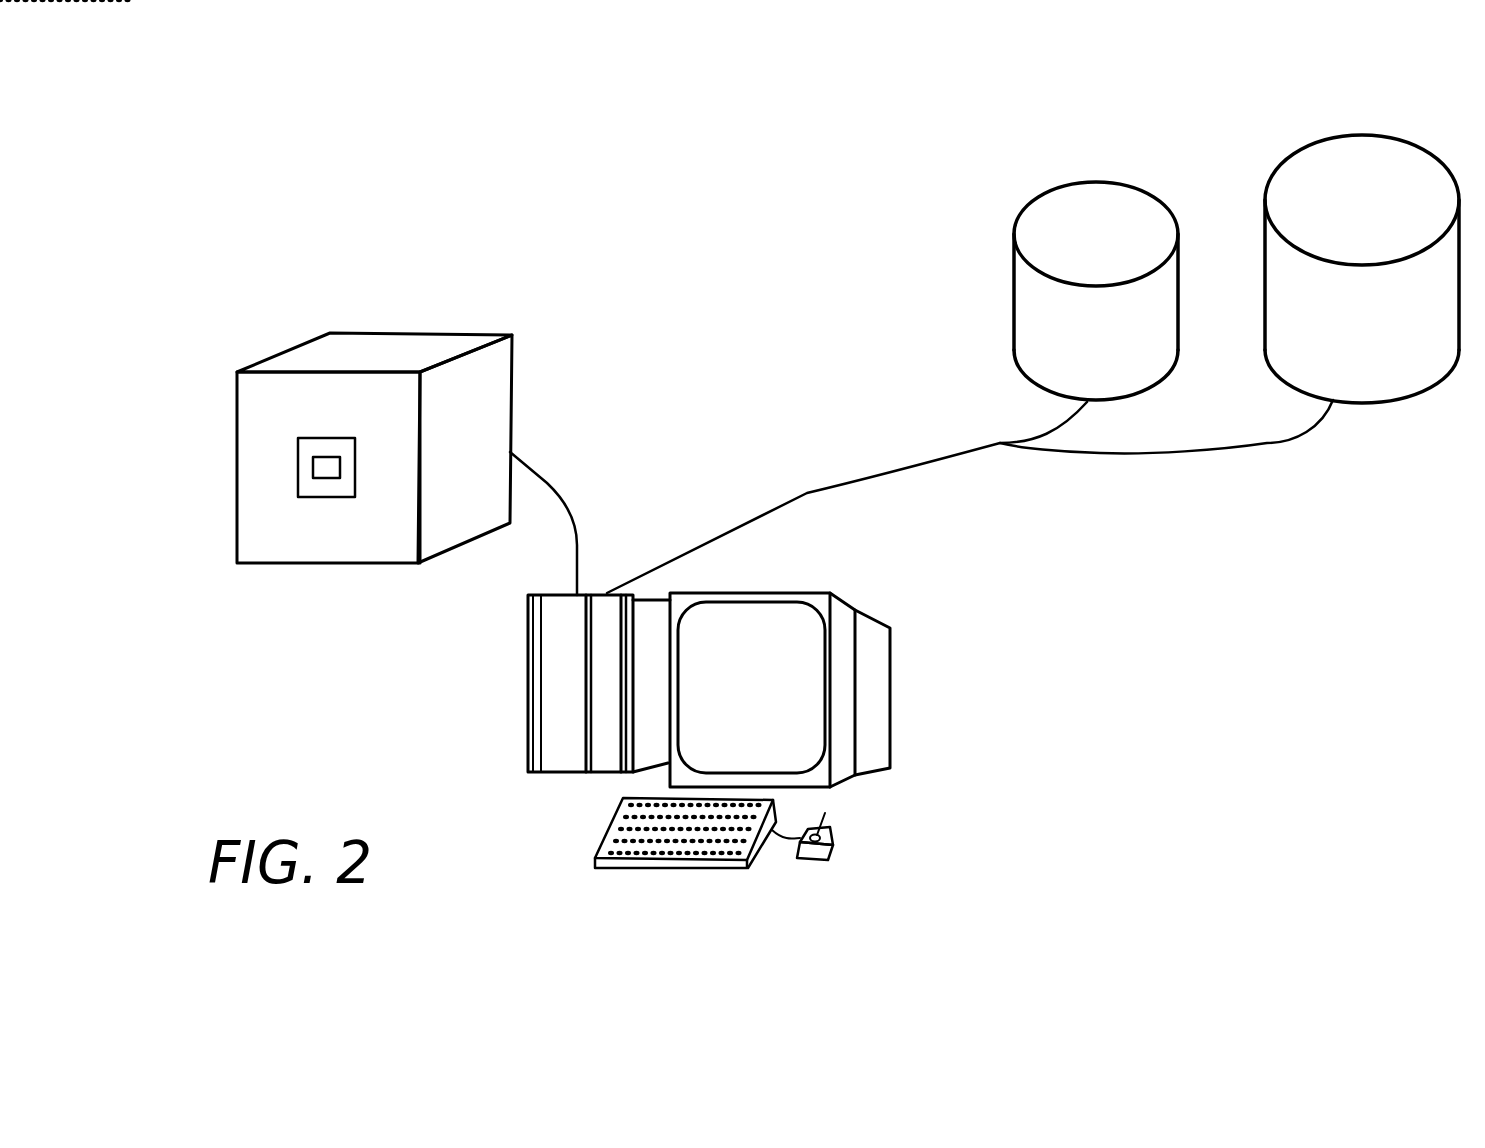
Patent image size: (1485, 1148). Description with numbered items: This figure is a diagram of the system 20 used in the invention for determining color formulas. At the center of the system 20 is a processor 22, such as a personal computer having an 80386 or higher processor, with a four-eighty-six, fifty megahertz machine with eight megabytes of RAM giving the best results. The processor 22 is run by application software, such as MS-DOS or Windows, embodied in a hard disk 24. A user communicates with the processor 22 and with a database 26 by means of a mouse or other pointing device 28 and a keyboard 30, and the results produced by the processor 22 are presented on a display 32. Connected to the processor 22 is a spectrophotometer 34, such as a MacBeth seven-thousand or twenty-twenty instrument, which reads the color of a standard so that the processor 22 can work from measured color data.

The system 20 is at (732, 256).
The processor 22 is at (1078, 711).
The hard disk 24 is at (528, 685).
The database 26 is at (1090, 182).
The pointing device 28 is at (833, 848).
The keyboard 30 is at (595, 832).
The display 32 is at (830, 593).
The spectrophotometer 34 is at (258, 364).